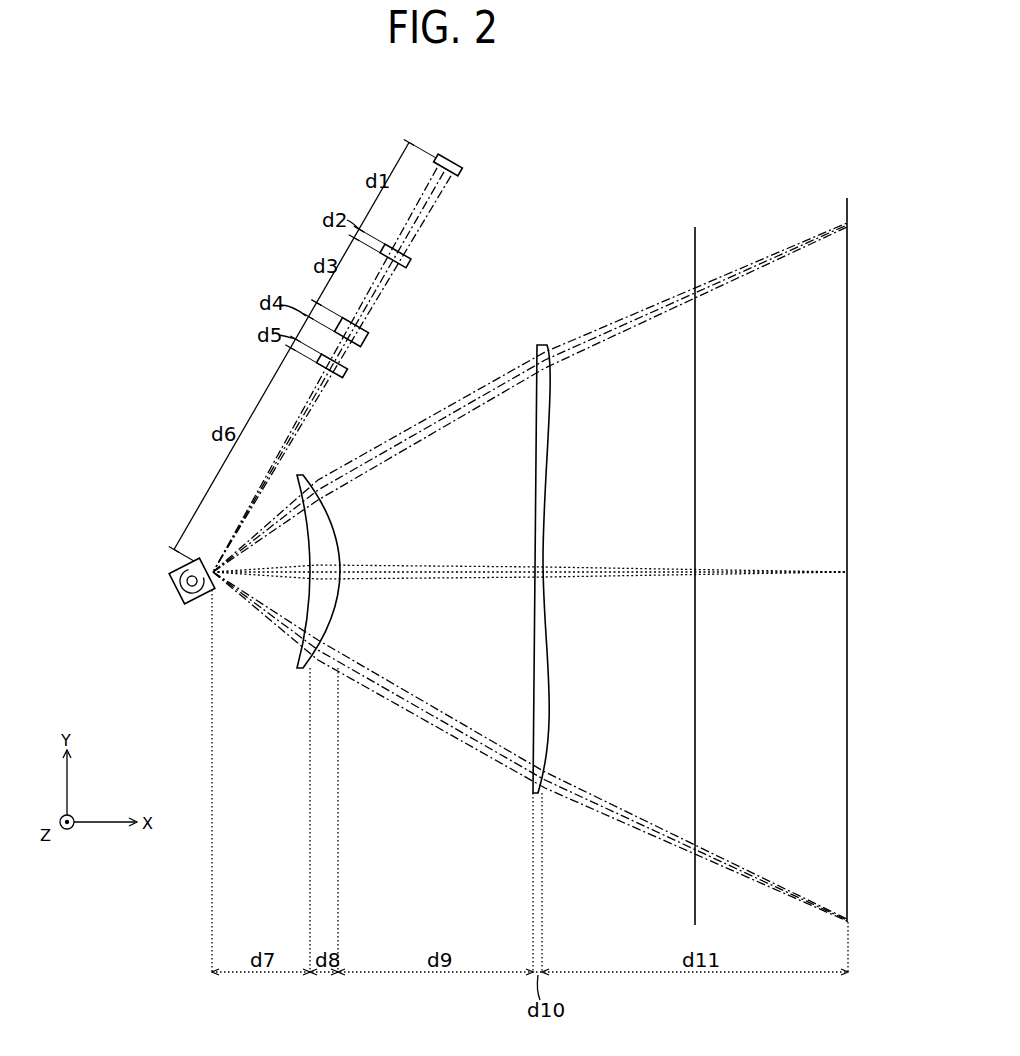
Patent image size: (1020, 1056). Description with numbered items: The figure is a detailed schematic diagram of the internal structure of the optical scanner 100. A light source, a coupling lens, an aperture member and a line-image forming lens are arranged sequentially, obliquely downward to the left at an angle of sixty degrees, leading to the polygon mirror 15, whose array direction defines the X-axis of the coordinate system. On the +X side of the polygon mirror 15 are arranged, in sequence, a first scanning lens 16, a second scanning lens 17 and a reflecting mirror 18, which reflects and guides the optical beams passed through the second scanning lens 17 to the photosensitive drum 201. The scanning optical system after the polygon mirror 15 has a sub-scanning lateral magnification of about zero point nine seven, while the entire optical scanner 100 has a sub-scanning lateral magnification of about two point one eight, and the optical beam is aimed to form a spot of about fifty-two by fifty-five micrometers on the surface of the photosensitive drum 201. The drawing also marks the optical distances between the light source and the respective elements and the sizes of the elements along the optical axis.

The polygon mirror 15 is at (172, 586).
The first scanning lens 16 is at (306, 474).
The second scanning lens 17 is at (540, 347).
The reflecting mirror 18 is at (694, 250).
The optical scanner 100 is at (702, 118).
The photosensitive drum 201 is at (846, 212).